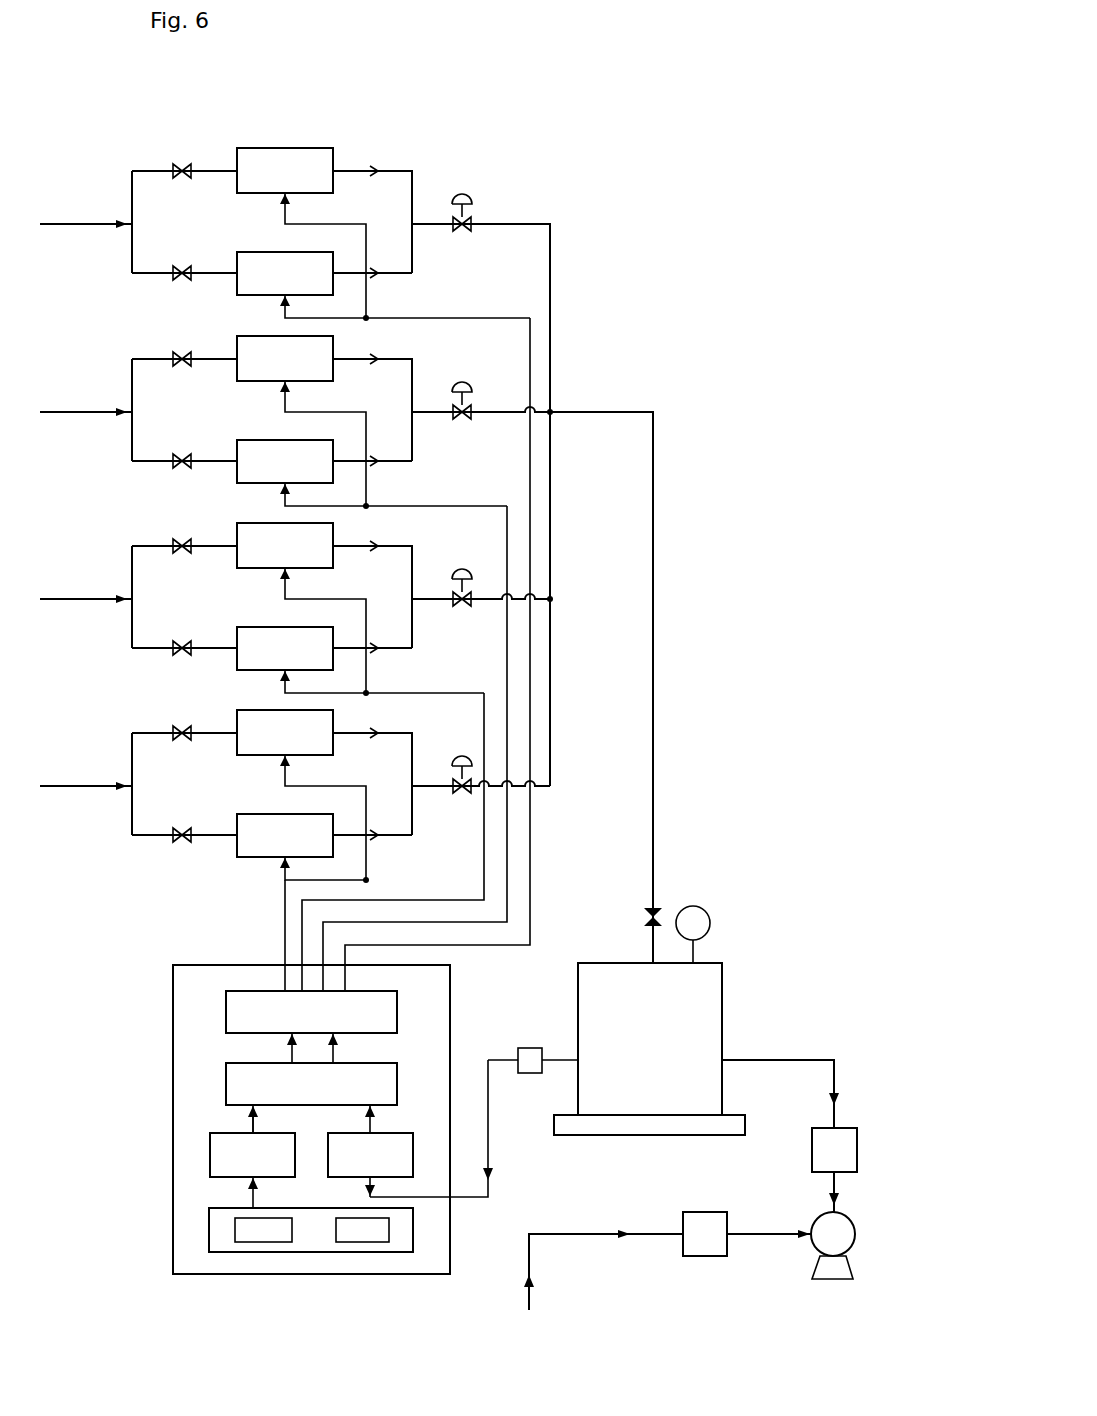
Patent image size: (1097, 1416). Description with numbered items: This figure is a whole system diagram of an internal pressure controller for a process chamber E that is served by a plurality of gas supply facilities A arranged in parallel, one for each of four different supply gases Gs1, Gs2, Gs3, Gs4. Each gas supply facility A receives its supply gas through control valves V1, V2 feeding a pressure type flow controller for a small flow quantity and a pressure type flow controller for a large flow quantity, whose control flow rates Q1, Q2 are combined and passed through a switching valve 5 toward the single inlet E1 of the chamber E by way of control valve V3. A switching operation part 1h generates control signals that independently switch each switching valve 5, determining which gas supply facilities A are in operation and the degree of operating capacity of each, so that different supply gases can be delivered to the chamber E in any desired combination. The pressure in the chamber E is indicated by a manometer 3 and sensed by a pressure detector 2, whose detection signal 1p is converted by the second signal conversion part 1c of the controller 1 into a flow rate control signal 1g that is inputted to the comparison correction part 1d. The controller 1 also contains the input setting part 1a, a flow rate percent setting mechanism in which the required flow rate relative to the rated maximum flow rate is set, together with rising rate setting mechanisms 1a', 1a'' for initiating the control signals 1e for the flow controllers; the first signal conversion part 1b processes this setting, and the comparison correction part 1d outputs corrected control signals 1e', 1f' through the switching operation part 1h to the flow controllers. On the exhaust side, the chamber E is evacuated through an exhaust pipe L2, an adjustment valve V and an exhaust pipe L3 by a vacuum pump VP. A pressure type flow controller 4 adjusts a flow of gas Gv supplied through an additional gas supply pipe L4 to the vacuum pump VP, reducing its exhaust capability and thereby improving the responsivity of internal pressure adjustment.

The controller 1 is at (173, 1050).
The input setting part 1a is at (273, 1215).
The rising rate setting mechanism 1a' is at (362, 1263).
The rising rate setting mechanism 1a'' is at (259, 1263).
The first signal conversion part 1b is at (210, 1157).
The second signal conversion part 1c is at (413, 1155).
The comparison correction part 1d is at (397, 1085).
The control signal 1e is at (215, 1120).
The control signal 1e' is at (380, 1048).
The control signal 1f' is at (247, 1048).
The flow rate control signal 1g is at (373, 1125).
The switching operation part 1h is at (397, 1003).
The detection signal 1p is at (492, 1178).
The pressure detector 2 is at (520, 1046).
The manometer 3 is at (710, 912).
The pressure type flow controller 4 is at (703, 1258).
The switching valve 5 is at (470, 218).
The gas supply facility A is at (297, 139).
The process chamber E is at (578, 993).
The inlet E1 is at (645, 963).
The supply gas Gs1 is at (86, 214).
The supply gas Gs2 is at (86, 402).
The supply gas Gs3 is at (86, 589).
The supply gas Gs4 is at (86, 776).
The gas Gv is at (533, 1281).
The exhaust pipe L2 is at (770, 1058).
The exhaust pipe L3 is at (832, 1207).
The additional gas supply pipe L4 is at (750, 1232).
The control flow rate Q1 is at (374, 168).
The control flow rate Q2 is at (382, 270).
The adjustment valve V is at (858, 1152).
The vacuum pump VP is at (833, 1245).
The control valve V1 is at (183, 162).
The control valve V2 is at (183, 264).
The control valve V3 is at (651, 906).